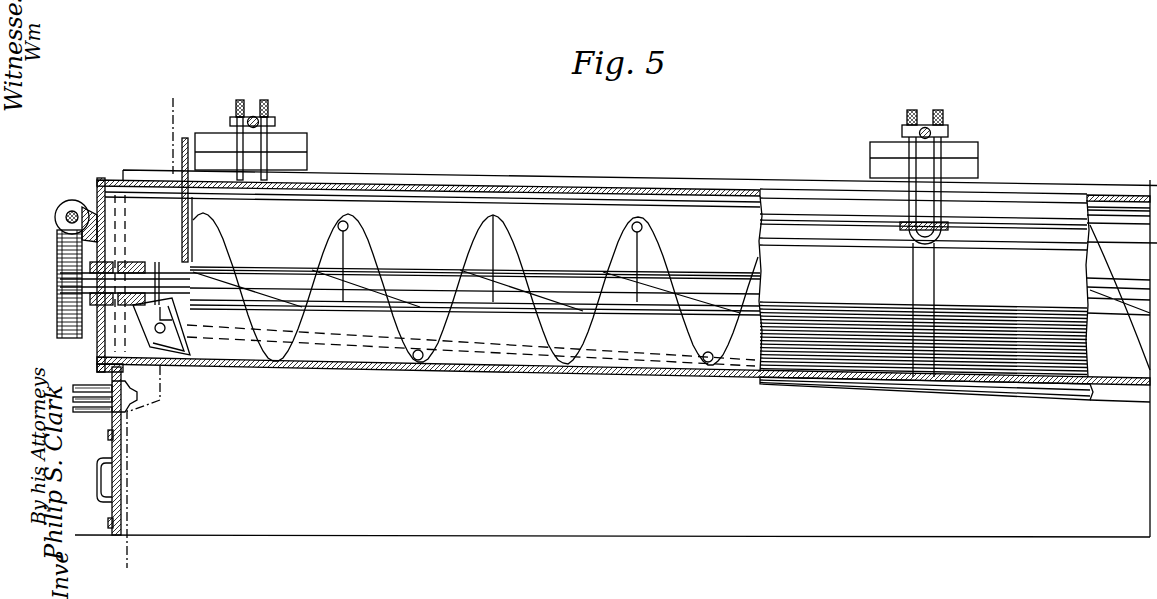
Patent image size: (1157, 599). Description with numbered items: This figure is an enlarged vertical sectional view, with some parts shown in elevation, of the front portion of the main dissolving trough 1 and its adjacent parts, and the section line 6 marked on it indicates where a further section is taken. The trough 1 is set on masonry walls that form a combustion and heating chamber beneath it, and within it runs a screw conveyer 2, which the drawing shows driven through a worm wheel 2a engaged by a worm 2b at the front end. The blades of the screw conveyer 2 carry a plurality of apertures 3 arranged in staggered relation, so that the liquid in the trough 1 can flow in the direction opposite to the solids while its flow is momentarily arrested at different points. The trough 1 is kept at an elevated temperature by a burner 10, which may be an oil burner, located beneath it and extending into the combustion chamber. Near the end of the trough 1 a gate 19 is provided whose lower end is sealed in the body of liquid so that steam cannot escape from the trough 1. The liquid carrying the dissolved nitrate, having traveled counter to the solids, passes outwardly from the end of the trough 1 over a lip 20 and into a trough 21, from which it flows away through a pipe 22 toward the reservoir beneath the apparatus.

The trough 1 is at (860, 378).
The screw conveyer 2 is at (358, 246).
The worm wheel 2a is at (57, 272).
The worm 2b is at (62, 208).
The apertures 3 is at (338, 224).
The section line 6- 6 is at (145, 100).
The burner 10 is at (92, 411).
The gate 19 is at (186, 140).
The lip 20 is at (195, 340).
The trough 21 is at (157, 292).
The pipe 22 is at (158, 345).